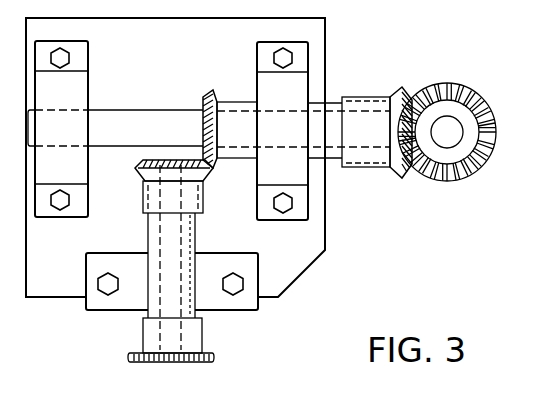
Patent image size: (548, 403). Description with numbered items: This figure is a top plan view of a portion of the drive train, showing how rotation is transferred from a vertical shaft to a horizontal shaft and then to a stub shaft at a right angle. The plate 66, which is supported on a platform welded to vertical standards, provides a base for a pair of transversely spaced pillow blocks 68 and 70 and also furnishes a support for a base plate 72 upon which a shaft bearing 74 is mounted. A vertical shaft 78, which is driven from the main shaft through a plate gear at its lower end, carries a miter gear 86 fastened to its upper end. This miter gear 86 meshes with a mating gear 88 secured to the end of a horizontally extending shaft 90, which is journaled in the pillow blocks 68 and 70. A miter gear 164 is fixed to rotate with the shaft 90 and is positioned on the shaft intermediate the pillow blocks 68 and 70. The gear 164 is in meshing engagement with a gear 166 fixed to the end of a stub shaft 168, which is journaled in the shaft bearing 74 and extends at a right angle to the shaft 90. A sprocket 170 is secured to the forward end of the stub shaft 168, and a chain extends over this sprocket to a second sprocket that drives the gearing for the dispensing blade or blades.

The plate 66 is at (300, 268).
The pillow block 68 is at (80, 90).
The pillow block 70 is at (268, 92).
The base plate 72 is at (235, 305).
The shaft bearing 74 is at (198, 242).
The vertical shaft 78 is at (457, 142).
The miter gear 86 is at (486, 114).
The mating gear 88 is at (397, 96).
The horizontally extending shaft 90 is at (150, 139).
The miter gear 164 is at (206, 96).
The gear 166 is at (145, 173).
The stub shaft 168 is at (188, 195).
The sprocket 170 is at (190, 362).